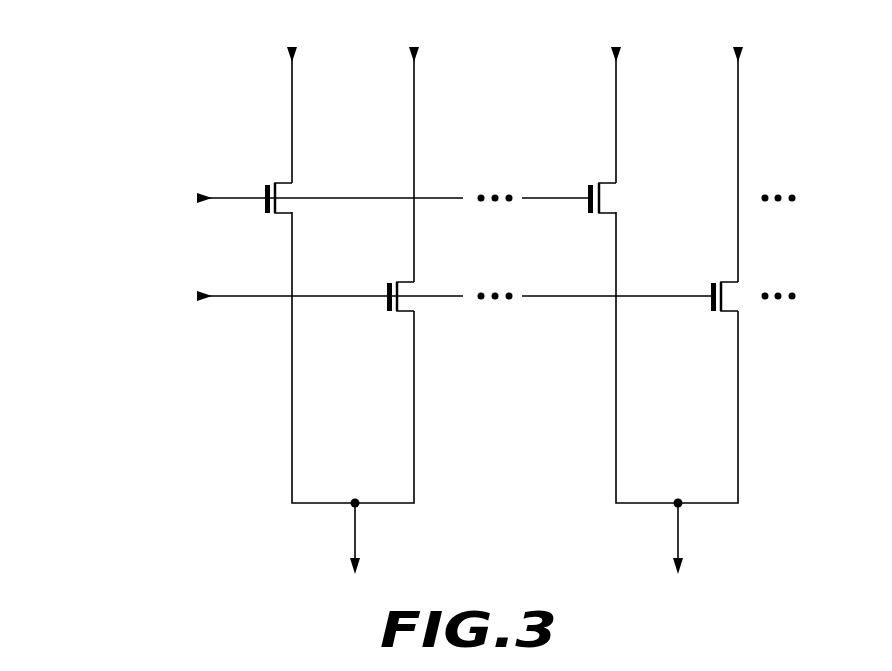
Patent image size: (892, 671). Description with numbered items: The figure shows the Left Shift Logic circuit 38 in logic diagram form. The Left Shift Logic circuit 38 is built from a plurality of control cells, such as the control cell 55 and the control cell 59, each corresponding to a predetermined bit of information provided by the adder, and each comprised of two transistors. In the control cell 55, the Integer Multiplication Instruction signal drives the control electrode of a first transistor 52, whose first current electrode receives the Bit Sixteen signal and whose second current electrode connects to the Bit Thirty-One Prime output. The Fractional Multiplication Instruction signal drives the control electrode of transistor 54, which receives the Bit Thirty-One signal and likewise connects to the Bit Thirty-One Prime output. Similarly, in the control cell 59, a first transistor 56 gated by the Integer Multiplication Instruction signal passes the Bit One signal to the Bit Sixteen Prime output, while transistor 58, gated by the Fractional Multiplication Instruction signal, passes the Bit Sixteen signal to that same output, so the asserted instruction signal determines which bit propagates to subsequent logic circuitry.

The Left Shift Logic circuit 38 is at (161, 549).
The first transistor 52 is at (280, 181).
The transistor 54 is at (403, 280).
The control cell 55 is at (466, 425).
The first transistor 56 is at (606, 181).
The transistor 58 is at (729, 280).
The control cell 59 is at (830, 425).